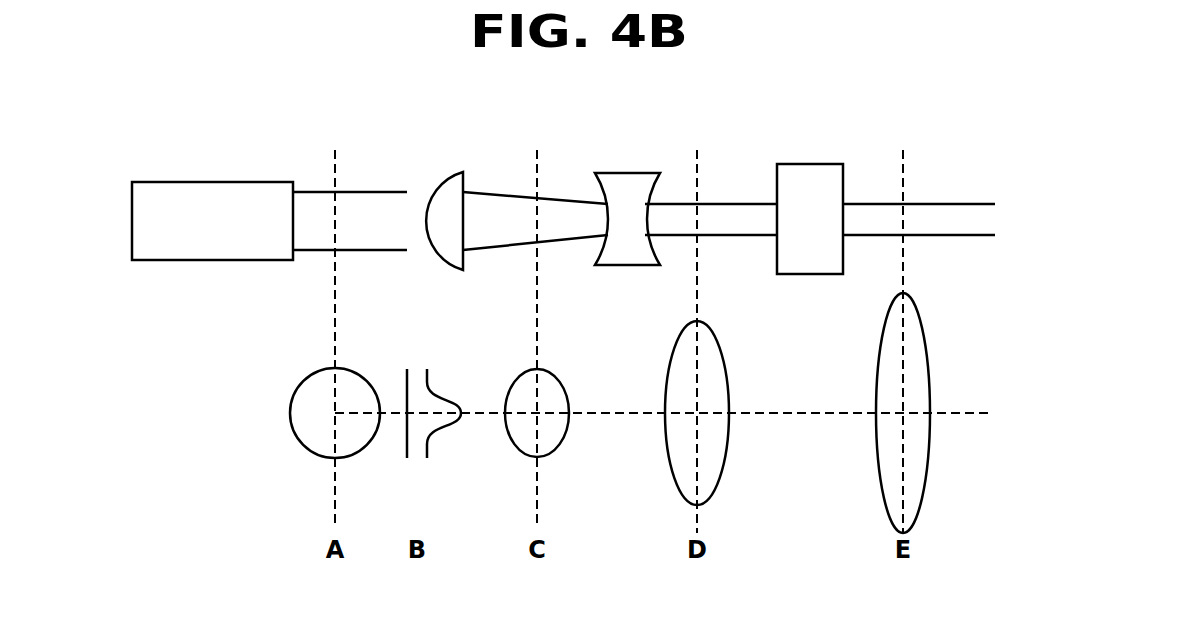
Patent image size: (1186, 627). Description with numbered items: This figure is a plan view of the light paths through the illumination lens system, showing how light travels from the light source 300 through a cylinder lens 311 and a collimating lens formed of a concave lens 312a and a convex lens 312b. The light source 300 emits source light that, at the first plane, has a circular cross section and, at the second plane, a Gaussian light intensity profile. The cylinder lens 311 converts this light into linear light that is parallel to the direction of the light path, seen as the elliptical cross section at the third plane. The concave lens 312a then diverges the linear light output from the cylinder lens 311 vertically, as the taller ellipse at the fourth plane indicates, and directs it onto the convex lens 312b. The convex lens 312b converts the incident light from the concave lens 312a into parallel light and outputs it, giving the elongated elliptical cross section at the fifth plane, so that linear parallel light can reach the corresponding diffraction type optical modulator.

The light source 300 is at (207, 195).
The cylinder lens 311 is at (425, 187).
The concave lens 312a is at (632, 180).
The convex lens 312b is at (815, 175).